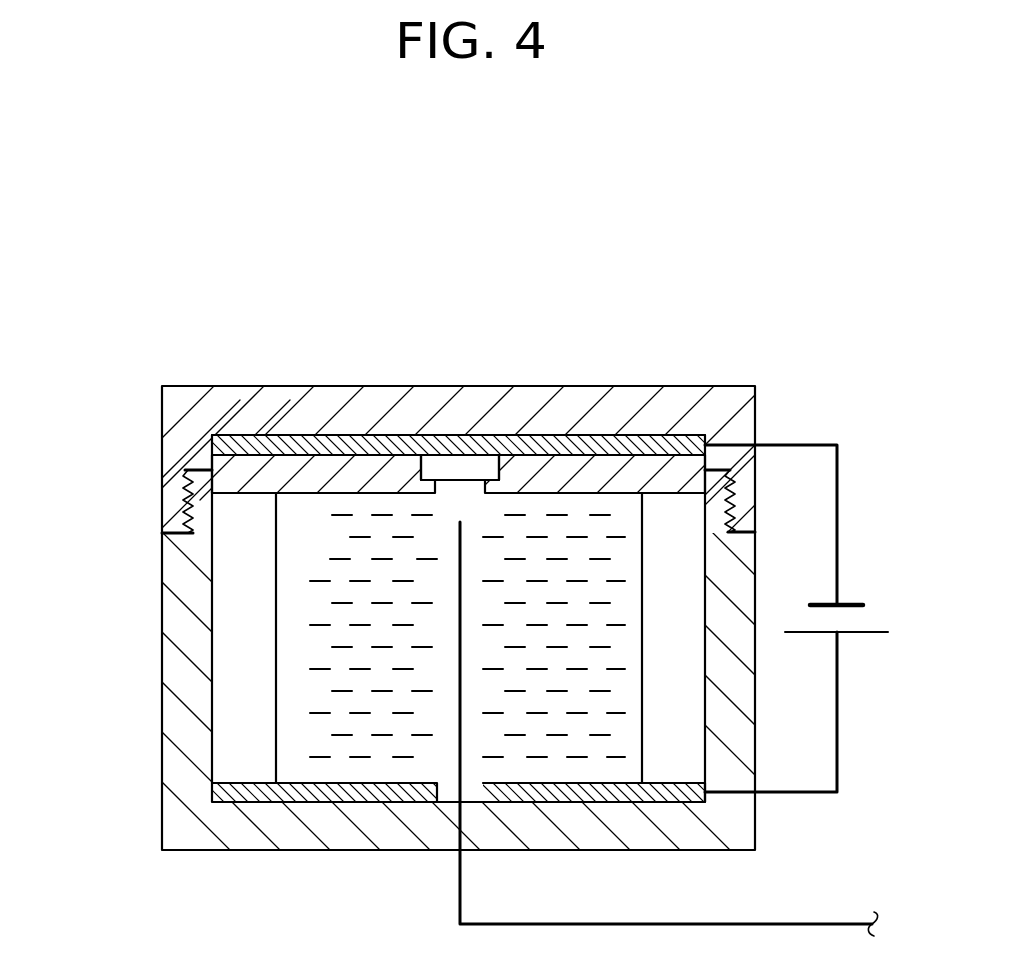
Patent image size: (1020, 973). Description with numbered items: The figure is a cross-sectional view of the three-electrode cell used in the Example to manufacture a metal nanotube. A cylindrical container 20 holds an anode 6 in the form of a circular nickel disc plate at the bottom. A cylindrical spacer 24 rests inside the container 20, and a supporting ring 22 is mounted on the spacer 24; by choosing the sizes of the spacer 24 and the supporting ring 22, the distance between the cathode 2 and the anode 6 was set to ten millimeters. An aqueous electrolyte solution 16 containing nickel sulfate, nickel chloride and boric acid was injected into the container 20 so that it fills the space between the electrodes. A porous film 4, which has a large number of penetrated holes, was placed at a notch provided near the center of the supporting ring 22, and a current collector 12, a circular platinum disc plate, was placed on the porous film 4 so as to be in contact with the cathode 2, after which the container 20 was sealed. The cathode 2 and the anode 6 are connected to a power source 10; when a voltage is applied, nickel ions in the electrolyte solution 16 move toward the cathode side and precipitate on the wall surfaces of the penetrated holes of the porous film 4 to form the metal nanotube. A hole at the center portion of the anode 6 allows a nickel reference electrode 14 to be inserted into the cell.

The cathode 2 is at (432, 457).
The porous film 4 is at (475, 468).
The anode 6 is at (360, 797).
The power source 10 is at (865, 580).
The current collector 12 is at (648, 440).
The reference electrode 14 is at (457, 552).
The electrolyte solution 16 is at (300, 746).
The container 20 is at (211, 405).
The supporting ring 22 is at (262, 485).
The spacer 24 is at (242, 617).